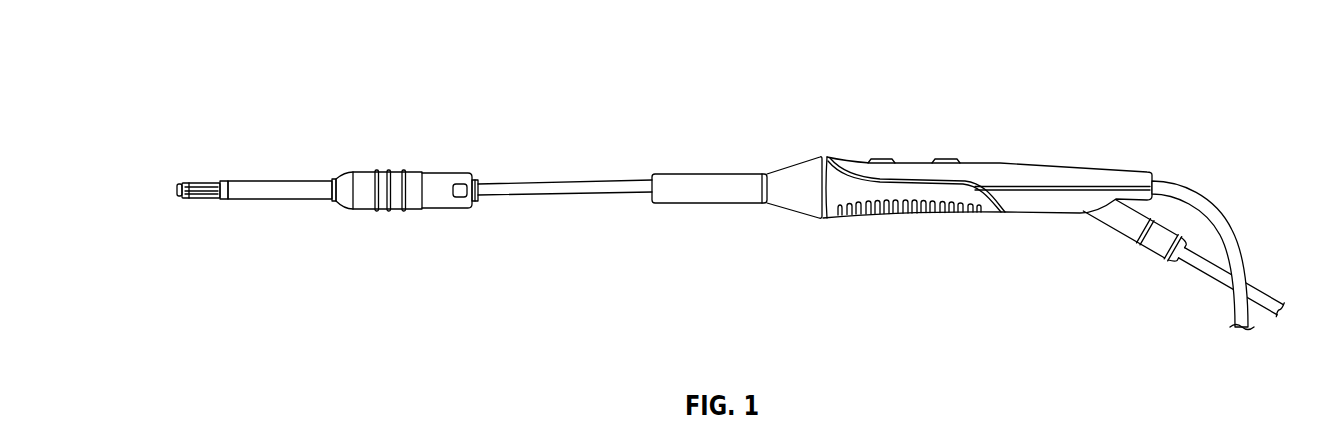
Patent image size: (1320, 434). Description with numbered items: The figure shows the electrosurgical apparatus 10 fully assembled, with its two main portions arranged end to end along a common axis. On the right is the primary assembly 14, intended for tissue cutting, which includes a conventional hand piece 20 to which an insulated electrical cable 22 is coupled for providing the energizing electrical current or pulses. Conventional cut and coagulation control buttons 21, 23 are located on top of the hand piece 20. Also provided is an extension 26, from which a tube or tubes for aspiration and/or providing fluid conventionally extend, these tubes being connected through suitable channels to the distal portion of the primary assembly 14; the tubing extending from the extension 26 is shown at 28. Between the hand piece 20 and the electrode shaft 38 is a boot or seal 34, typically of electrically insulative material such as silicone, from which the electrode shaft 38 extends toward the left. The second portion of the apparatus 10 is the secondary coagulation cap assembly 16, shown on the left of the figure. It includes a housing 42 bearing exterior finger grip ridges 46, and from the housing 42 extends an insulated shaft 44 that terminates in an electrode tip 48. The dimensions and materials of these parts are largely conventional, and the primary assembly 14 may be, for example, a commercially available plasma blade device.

The electrosurgical apparatus 10 is at (216, 88).
The primary assembly 14 is at (1197, 275).
The secondary assembly 16 is at (482, 242).
The hand piece 20 is at (1005, 164).
The cut control button 21 is at (882, 158).
The insulated electrical cable 22 is at (1198, 197).
The coagulation control button 23 is at (942, 158).
The extension 26 is at (1122, 227).
The cable 28 is at (1220, 280).
The boot 34 is at (715, 182).
The electrode shaft 38 is at (577, 186).
The housing 42 is at (430, 180).
The insulated shaft 44 is at (287, 179).
The finger grip ridges 46 is at (376, 169).
The electrode tip 48 is at (177, 188).